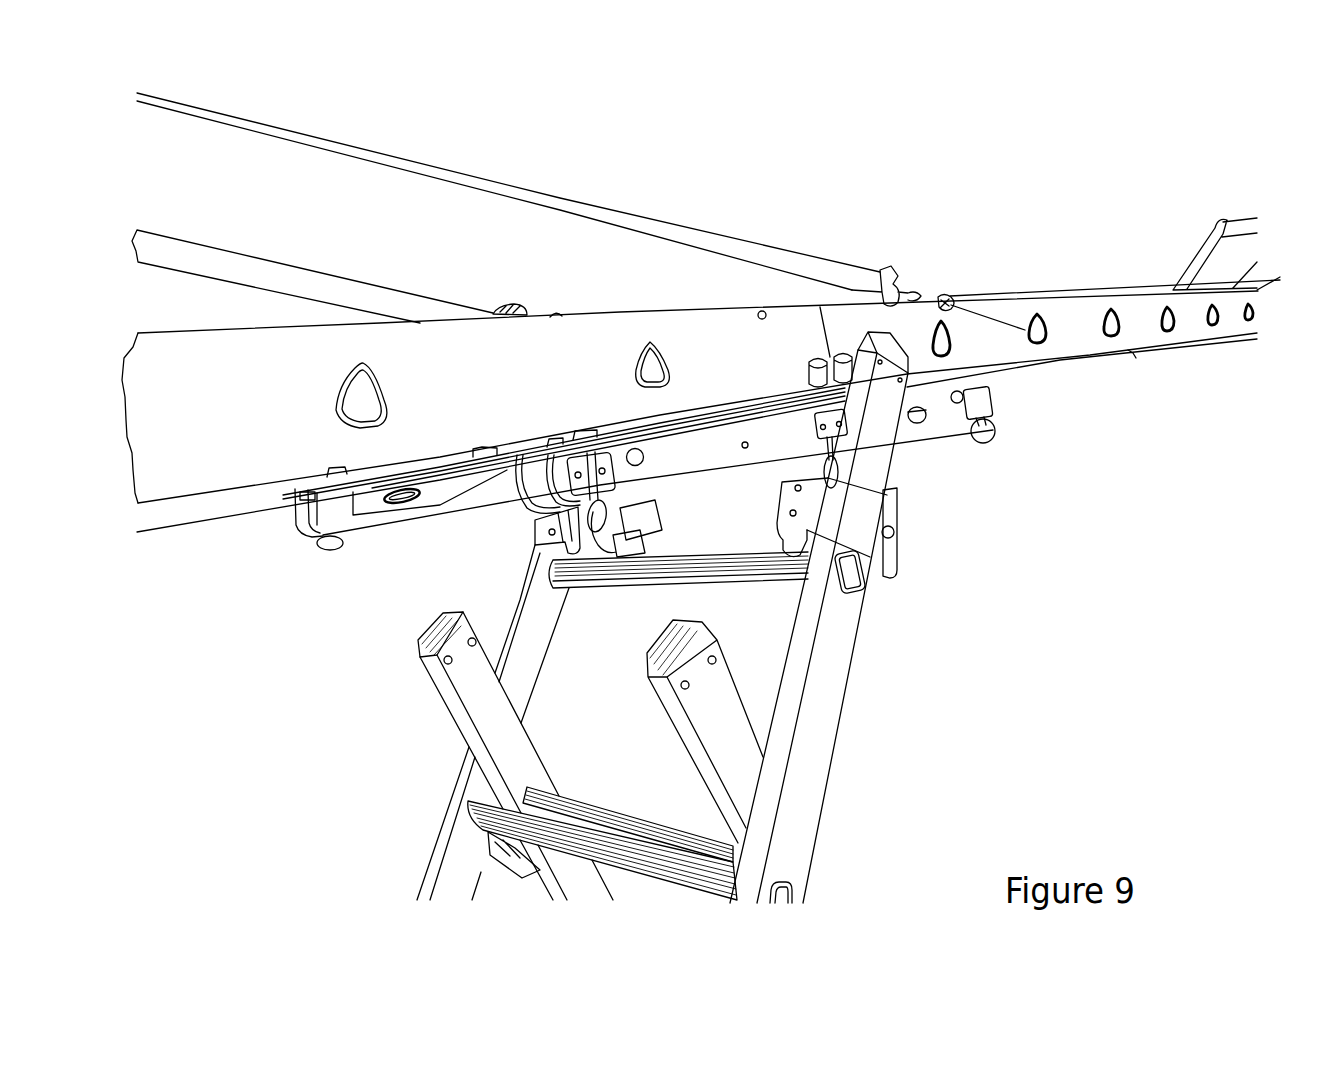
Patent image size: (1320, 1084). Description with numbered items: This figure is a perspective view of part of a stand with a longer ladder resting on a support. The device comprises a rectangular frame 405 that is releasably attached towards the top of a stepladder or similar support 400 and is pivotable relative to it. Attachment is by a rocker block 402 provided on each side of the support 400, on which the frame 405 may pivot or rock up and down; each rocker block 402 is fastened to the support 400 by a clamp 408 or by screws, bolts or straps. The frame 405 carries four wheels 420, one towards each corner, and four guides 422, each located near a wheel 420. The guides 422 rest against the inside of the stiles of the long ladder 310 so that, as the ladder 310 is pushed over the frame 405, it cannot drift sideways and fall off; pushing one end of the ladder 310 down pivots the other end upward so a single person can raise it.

The long ladder 310 is at (294, 411).
The wheel 420 is at (632, 433).
The rocker block 402 is at (783, 470).
The guide 422 is at (507, 458).
The support 400 is at (472, 595).
The rectangular frame 405 is at (950, 468).
The clamp 408 is at (860, 518).